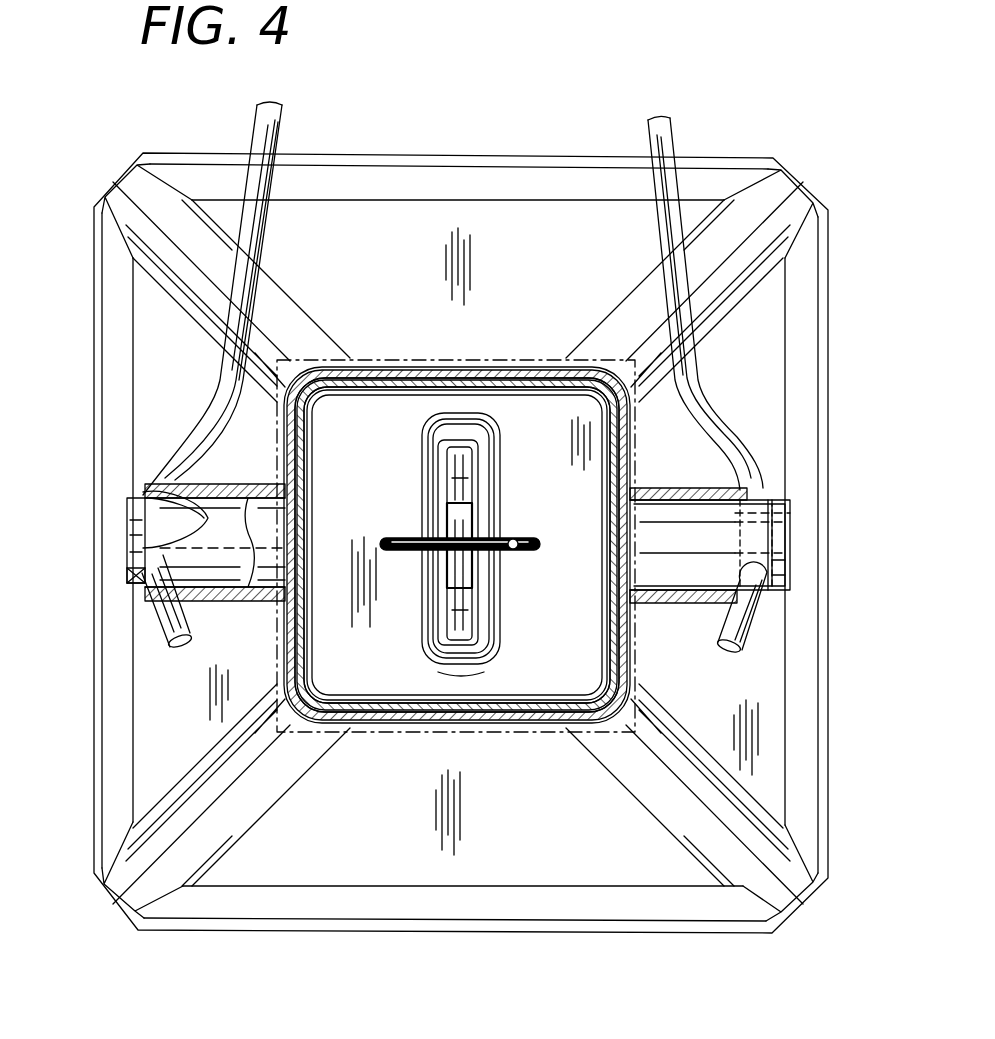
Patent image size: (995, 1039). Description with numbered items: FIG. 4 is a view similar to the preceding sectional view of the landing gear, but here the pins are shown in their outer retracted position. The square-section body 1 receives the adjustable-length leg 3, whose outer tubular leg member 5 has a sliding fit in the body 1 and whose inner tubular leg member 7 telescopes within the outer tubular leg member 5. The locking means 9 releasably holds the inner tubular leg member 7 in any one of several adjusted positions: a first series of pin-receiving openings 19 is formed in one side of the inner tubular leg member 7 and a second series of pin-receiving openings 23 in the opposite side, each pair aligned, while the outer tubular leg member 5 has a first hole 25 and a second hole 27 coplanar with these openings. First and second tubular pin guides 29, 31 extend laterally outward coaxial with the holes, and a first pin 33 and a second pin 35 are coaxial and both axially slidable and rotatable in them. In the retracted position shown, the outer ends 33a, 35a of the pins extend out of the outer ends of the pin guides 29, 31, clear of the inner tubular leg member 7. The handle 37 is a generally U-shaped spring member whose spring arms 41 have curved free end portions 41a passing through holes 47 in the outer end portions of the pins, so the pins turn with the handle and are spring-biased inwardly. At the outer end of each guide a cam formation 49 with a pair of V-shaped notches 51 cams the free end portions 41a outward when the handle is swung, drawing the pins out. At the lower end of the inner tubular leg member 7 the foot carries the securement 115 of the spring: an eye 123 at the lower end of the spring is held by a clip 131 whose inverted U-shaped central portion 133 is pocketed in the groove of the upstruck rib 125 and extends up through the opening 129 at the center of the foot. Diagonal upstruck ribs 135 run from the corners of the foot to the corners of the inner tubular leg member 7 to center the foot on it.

The body 1 is at (480, 360).
The adjustable-length leg 3 is at (370, 360).
The outer tubular leg member 5 is at (527, 378).
The inner tubular leg member 7 is at (533, 392).
The locking means 9 is at (792, 532).
The pin-receiving openings 19 is at (313, 523).
The pin-receiving openings 23 is at (610, 578).
The first hole 25 is at (283, 604).
The second hole 27 is at (647, 487).
The first tubular pin guide 29 is at (227, 497).
The second tubular pin guide 31 is at (715, 603).
The first pin 33 is at (270, 484).
The outer end of first pin 33a is at (131, 575).
The second pin 35 is at (659, 545).
The outer end of second pin 35a is at (792, 570).
The handle 37 is at (676, 135).
The spring arms 41 is at (165, 440).
The free end portions of spring arms 41a is at (182, 650).
The holes 47 is at (135, 592).
The cam formation 49 is at (140, 548).
The V-shaped notches 51 is at (175, 505).
The securement of lower spring end 115 is at (505, 622).
The eye 123 is at (514, 537).
The upstruck rib 125 is at (460, 468).
The opening 129 is at (445, 588).
The clip 131 is at (470, 608).
The central portion of clip 133 is at (455, 518).
The upstruck ribs 135 is at (263, 295).